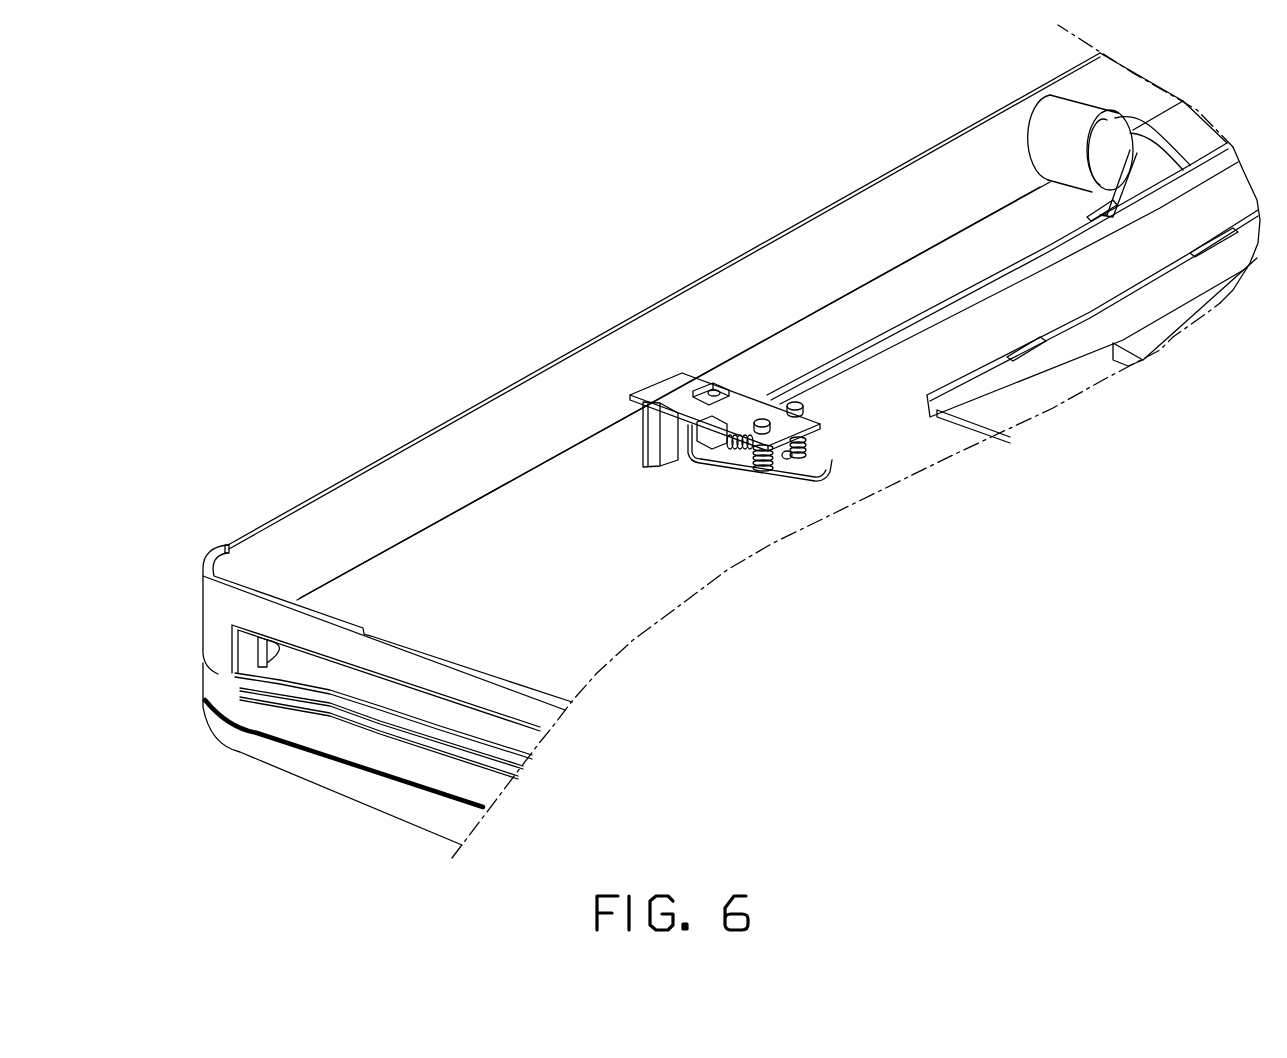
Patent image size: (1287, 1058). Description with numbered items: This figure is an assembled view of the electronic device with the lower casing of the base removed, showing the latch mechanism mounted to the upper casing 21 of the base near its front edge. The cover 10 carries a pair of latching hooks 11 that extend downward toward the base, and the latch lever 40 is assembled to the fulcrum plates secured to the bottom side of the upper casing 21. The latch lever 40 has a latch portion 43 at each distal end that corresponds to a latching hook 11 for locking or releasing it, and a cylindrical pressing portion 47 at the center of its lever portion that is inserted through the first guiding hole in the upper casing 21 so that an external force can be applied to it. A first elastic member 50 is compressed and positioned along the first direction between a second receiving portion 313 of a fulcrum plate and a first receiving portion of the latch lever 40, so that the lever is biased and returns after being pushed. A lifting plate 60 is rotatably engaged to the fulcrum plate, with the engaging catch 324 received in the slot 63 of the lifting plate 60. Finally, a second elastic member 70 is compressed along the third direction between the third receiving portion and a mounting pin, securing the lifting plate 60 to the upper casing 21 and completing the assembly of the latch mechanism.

The cover 10 is at (251, 738).
The latching hook 11 is at (653, 450).
The upper casing 21 is at (340, 532).
The latch lever 40 is at (935, 323).
The latch portion 43 is at (650, 422).
The pressing portion 47 is at (1110, 150).
The first elastic member 50 is at (740, 440).
The lifting plate 60 is at (672, 393).
The slot 63 is at (710, 393).
The second elastic member 70 is at (803, 452).
The second receiving portion 313 is at (788, 459).
The engaging catch 324 is at (724, 396).